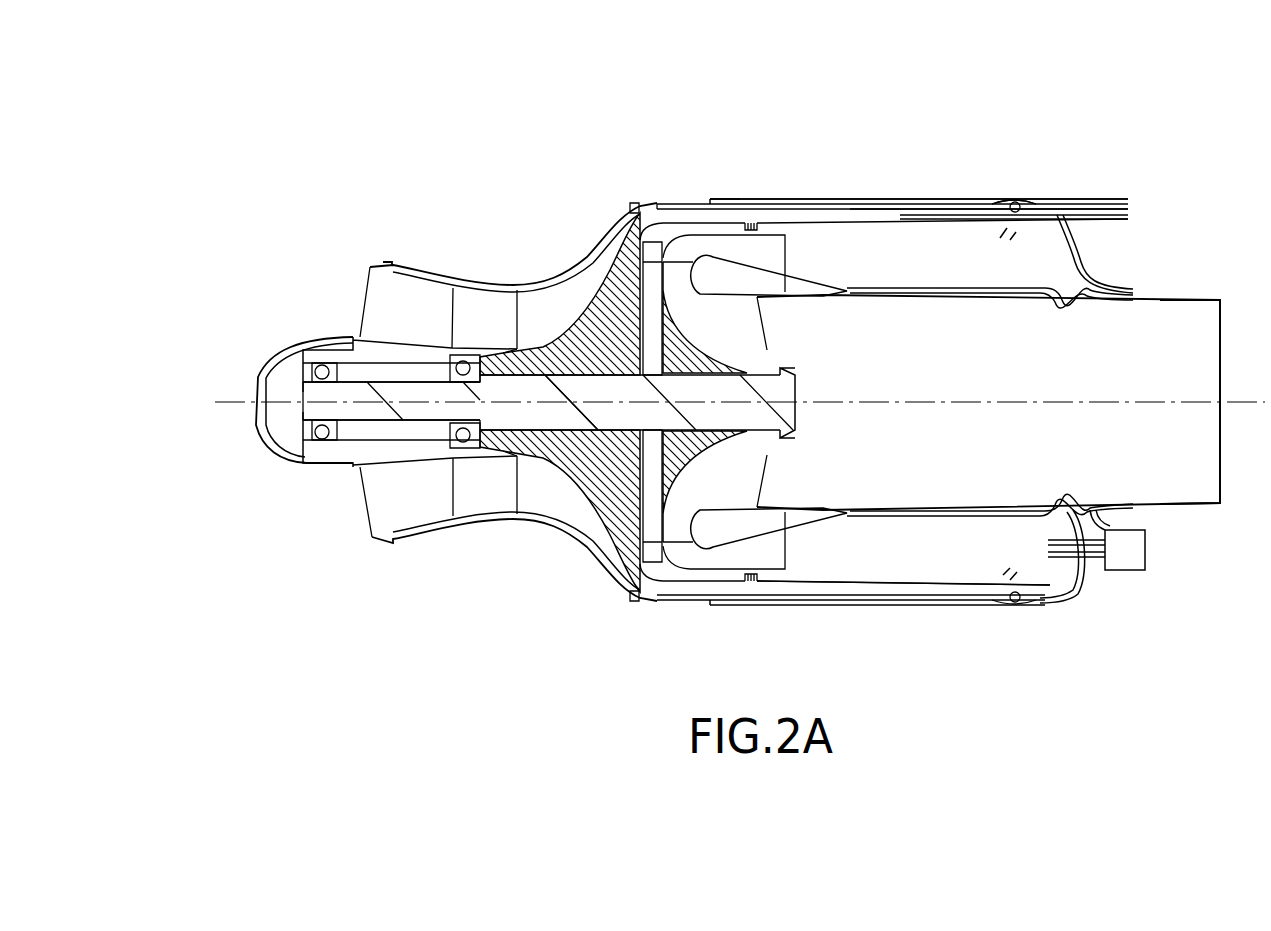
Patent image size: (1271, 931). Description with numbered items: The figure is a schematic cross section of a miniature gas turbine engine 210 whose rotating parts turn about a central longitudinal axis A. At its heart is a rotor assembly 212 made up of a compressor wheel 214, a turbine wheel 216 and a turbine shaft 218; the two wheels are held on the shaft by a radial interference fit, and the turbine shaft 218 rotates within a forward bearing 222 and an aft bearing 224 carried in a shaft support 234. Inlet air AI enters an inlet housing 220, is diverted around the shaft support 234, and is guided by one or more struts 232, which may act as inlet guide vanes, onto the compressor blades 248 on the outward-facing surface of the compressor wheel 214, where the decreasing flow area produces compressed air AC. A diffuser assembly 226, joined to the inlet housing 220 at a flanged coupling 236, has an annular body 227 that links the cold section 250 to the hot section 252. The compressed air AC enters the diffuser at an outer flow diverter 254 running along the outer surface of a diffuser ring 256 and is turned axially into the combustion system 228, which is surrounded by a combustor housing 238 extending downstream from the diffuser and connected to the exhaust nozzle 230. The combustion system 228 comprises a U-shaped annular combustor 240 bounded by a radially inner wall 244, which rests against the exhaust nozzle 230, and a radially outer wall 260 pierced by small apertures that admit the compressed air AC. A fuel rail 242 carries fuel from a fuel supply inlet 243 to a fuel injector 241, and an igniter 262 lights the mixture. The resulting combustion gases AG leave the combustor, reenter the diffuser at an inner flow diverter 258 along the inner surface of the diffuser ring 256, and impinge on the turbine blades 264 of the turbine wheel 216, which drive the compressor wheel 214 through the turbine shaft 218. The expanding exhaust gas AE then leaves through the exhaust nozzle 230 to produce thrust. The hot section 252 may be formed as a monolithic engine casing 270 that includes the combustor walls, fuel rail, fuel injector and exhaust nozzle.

The miniature gas turbine engine 210 is at (330, 145).
The rotor assembly 212 is at (808, 348).
The compressor wheel 214 is at (615, 320).
The turbine wheel 216 is at (706, 453).
The turbine shaft 218 is at (627, 423).
The inlet housing 220 is at (398, 262).
The forward bearing 222 is at (318, 455).
The aft bearing 224 is at (460, 460).
The diffuser assembly 226 is at (683, 197).
The annular body 227 is at (647, 601).
The combustion system 228 is at (1003, 175).
The exhaust nozzle 230 is at (1165, 512).
The struts 232 is at (484, 402).
The shaft support 234 is at (367, 454).
The flanged coupling 236 is at (634, 203).
The combustor housing 238 is at (872, 200).
The combustor 240 is at (938, 232).
The fuel injector 241 is at (1000, 240).
The fuel rail 242 is at (1022, 204).
The fuel supply inlet 243 is at (1112, 222).
The radially inner wall 244 is at (263, 390).
The compressor blades 248 is at (537, 377).
The cold section 250 is at (502, 243).
The hot section 252 is at (926, 175).
The outer flow diverter 254 is at (662, 207).
The diffuser ring 256 is at (748, 208).
The inner flow diverter 258 is at (790, 222).
The radially outer wall 260 is at (850, 588).
The igniter 262 is at (1125, 562).
The turbine blades 264 is at (755, 402).
The engine casing 270 is at (918, 622).
The central longitudinal axis A is at (385, 400).
The inlet air AI is at (377, 498).
The exhaust gas AE is at (900, 345).
The combustion gases AG is at (716, 243).
The compressed air AC is at (672, 590).